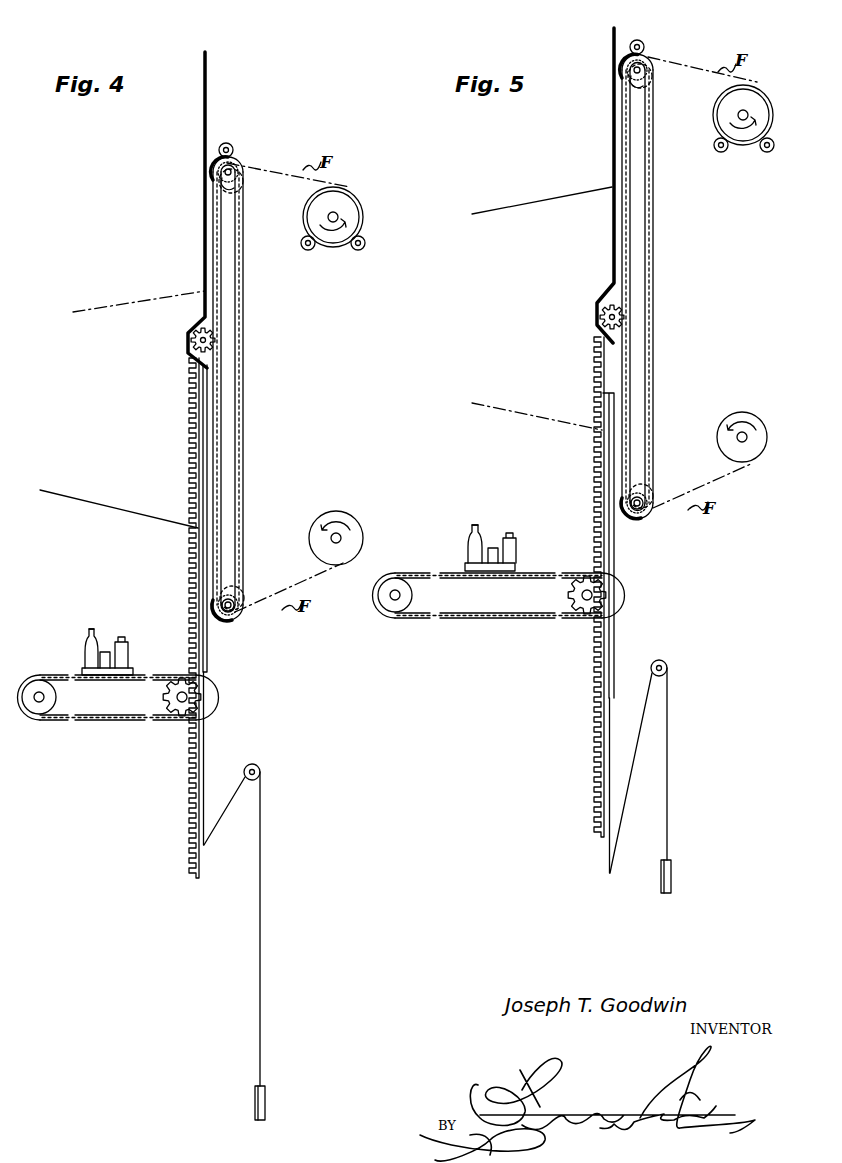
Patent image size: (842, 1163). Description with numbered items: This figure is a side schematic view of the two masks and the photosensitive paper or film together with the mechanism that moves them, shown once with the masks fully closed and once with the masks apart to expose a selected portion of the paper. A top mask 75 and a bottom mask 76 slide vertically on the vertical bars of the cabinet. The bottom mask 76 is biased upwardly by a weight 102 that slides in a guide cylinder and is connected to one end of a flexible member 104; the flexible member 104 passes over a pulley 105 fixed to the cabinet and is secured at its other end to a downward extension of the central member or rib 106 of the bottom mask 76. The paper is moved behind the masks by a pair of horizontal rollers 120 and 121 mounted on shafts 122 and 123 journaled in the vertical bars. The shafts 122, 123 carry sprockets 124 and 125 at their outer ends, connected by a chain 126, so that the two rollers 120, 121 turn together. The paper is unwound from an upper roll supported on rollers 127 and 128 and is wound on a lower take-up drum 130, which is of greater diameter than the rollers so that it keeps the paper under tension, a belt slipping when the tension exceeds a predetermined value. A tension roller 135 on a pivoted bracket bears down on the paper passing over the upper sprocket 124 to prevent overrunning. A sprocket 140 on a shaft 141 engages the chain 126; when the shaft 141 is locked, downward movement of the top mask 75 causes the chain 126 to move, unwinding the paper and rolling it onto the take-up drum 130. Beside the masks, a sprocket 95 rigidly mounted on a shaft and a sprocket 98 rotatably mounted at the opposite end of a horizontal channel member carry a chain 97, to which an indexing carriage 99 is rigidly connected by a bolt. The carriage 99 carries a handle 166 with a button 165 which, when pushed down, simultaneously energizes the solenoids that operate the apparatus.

In FIG. 4, the top mask 75 is at (208, 120).
In FIG. 5, the top mask 75 is at (612, 134).
In FIG. 4, the bottom mask 76 is at (203, 463).
In FIG. 5, the bottom mask 76 is at (616, 625).
In FIG. 4, the sprocket 95 is at (170, 722).
In FIG. 4, the chain 97 is at (95, 723).
In FIG. 5, the chain 97 is at (487, 621).
In FIG. 4, the sprocket 98 is at (38, 714).
In FIG. 4, the slide or indexing carriage 99 is at (135, 672).
In FIG. 5, the slide or indexing carriage 99 is at (517, 568).
In FIG. 4, the weight 102 is at (266, 1100).
In FIG. 5, the weight 102 is at (672, 870).
In FIG. 4, the flexible member 104 is at (259, 817).
In FIG. 5, the flexible member 104 is at (668, 735).
In FIG. 4, the pulley 105 is at (258, 767).
In FIG. 4, the central member or rib 106 is at (204, 730).
In FIG. 4, the horizontal roller 120 is at (236, 178).
In FIG. 5, the horizontal roller 120 is at (646, 72).
In FIG. 4, the horizontal roller 121 is at (233, 614).
In FIG. 5, the horizontal roller 121 is at (642, 512).
In FIG. 4, the shaft 122 is at (236, 190).
In FIG. 5, the shaft 122 is at (645, 88).
In FIG. 4, the shaft 123 is at (236, 600).
In FIG. 5, the shaft 123 is at (645, 498).
In FIG. 4, the sprocket 124 is at (240, 205).
In FIG. 5, the sprocket 124 is at (650, 60).
In FIG. 4, the sprocket 125 is at (238, 585).
In FIG. 5, the sprocket 125 is at (647, 483).
In FIG. 4, the chain 126 is at (222, 428).
In FIG. 5, the chain 126 is at (632, 300).
In FIG. 4, the roller 127 is at (310, 251).
In FIG. 5, the roller 127 is at (722, 153).
In FIG. 4, the roller 128 is at (358, 251).
In FIG. 5, the roller 128 is at (768, 153).
In FIG. 4, the take-up drum 130 is at (360, 526).
In FIG. 5, the take-up drum 130 is at (773, 408).
In FIG. 4, the tension roller 135 is at (234, 149).
In FIG. 5, the tension roller 135 is at (645, 45).
In FIG. 4, the sprocket 140 is at (195, 345).
In FIG. 5, the sprocket 140 is at (602, 320).
In FIG. 4, the shaft 141 is at (206, 340).
In FIG. 5, the shaft 141 is at (615, 317).
In FIG. 4, the button 165 is at (94, 634).
In FIG. 5, the button 165 is at (476, 529).
In FIG. 4, the handle 166 is at (84, 651).
In FIG. 5, the handle 166 is at (467, 548).